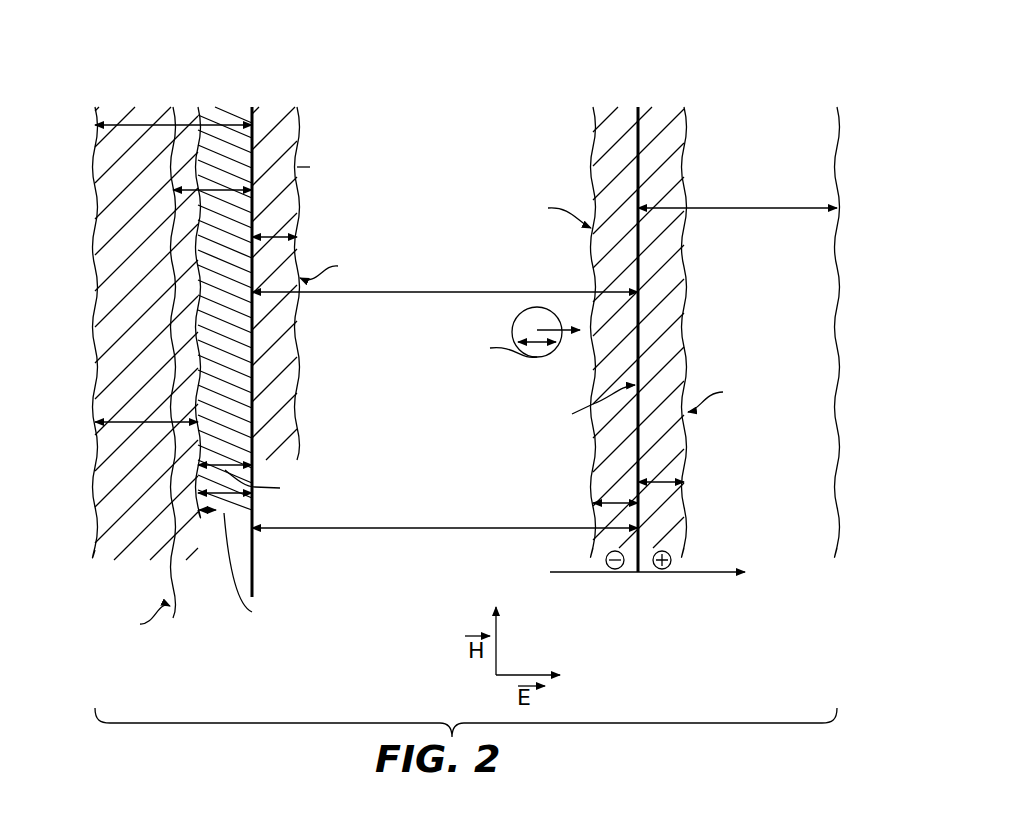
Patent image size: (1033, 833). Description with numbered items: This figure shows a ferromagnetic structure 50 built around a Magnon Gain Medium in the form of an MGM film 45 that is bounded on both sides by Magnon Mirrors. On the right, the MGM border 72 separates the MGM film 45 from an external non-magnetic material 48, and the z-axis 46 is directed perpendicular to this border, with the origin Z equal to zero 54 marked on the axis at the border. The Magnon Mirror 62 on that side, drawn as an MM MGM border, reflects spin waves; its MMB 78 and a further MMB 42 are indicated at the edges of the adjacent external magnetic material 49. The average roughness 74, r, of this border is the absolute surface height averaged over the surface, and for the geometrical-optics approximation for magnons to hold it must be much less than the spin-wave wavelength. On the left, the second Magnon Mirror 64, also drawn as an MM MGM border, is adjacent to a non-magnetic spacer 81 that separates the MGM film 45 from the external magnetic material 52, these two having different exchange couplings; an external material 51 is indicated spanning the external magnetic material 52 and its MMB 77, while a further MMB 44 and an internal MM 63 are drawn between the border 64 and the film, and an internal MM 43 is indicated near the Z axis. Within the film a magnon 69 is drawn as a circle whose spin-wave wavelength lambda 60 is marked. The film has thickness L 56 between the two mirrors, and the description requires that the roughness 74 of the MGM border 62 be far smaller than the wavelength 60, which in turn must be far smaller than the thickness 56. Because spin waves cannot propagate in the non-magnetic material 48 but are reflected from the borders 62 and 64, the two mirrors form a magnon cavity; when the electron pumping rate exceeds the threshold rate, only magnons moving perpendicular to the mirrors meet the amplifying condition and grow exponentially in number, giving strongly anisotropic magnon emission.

The MMB of external magnetic material 42 is at (590, 468).
The internal MM 43 is at (658, 645).
The MMB of external MM 44 is at (300, 455).
The MGM film 45 is at (418, 290).
The z-axis 46 is at (742, 587).
The external non-magnetic material 48 is at (712, 210).
The external magnetic material 49 is at (665, 480).
The magnon structure 50 is at (155, 655).
The external material 51 is at (123, 125).
The external magnetic material 52 is at (123, 425).
The Z=0 plane 54 is at (668, 590).
The thickness L 56 is at (452, 520).
The spin-wave wave length λ 60 is at (513, 327).
The Magnon Mirror 62 is at (645, 120).
The internal MM 63 is at (278, 237).
The Magnon Mirror 64 is at (258, 116).
The magnon wavelength 69 is at (518, 392).
The MGM border 72 is at (258, 382).
The roughness 74 is at (634, 128).
The MMB 77 is at (207, 113).
The MMB 78 is at (636, 138).
The non-magnetic spacer 81 is at (242, 502).